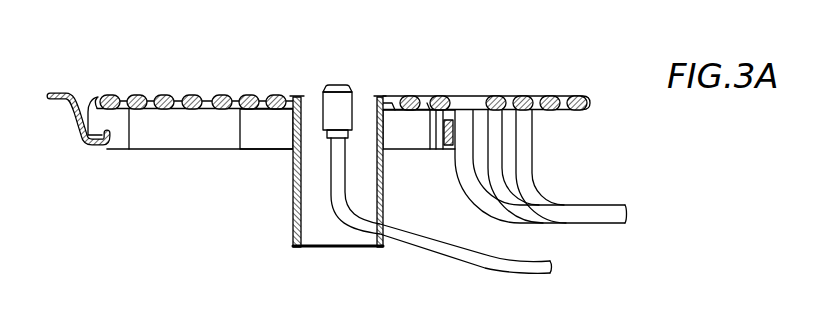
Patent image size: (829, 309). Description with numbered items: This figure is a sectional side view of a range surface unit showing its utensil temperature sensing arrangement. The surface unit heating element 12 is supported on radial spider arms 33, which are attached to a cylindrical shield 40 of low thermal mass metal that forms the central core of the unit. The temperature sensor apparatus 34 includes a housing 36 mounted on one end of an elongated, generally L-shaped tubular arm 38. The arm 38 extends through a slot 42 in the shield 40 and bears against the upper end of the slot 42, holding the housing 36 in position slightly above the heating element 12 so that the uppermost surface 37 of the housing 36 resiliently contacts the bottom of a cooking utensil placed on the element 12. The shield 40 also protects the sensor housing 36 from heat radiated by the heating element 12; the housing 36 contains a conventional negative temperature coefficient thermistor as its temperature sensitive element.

The surface unit heating element 12 is at (496, 96).
The spider arms 33 is at (161, 132).
The temperature sensor apparatus 34 is at (366, 78).
The housing 36 is at (318, 102).
The uppermost surface 37 is at (344, 84).
The tubular arm 38 is at (447, 250).
The cylindrical shield 40 is at (293, 181).
The slot 42 is at (396, 231).